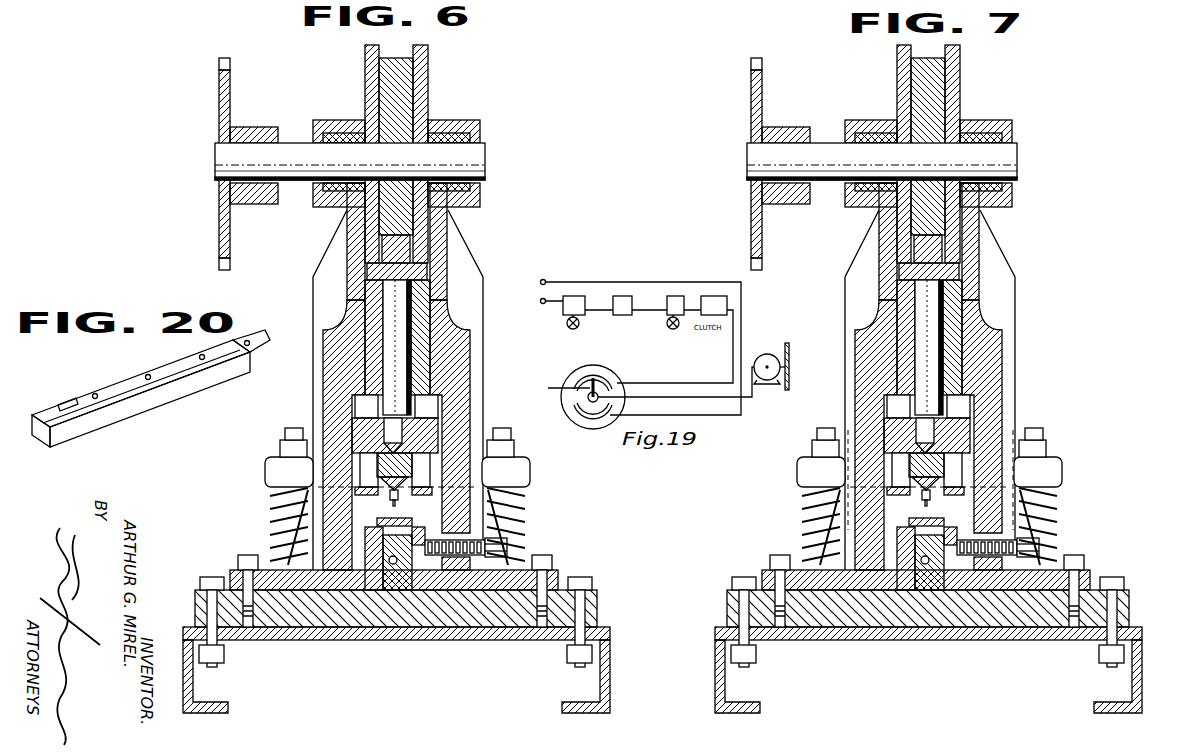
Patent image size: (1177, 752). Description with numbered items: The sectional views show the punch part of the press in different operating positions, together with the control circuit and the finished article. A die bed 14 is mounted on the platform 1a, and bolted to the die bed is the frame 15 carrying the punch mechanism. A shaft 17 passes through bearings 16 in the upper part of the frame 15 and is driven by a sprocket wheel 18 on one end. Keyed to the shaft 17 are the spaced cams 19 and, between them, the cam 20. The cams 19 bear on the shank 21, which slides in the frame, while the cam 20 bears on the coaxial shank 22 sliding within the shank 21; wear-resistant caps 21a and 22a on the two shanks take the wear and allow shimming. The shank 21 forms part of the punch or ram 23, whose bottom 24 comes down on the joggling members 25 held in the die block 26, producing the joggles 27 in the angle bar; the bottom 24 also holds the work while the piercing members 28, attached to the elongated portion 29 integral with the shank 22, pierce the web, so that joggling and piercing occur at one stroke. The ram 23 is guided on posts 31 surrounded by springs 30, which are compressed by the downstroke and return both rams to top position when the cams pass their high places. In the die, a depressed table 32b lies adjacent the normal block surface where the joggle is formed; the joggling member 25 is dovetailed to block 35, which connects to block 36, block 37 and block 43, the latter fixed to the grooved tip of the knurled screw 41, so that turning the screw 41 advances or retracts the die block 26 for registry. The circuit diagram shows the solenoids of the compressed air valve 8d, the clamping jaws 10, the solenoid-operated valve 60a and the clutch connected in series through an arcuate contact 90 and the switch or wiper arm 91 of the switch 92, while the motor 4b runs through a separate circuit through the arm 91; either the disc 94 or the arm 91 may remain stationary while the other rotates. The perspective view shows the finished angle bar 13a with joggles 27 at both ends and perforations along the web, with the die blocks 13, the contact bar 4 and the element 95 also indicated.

In FIG. 6, the platform 1a is at (357, 640).
In FIG. 7, the platform 1a is at (928, 670).
In FIG. 19, the contact bar 4 is at (789, 360).
In FIG. 19, the motor 4b is at (768, 354).
In FIG. 19, the compressed air valve 8d is at (564, 317).
In FIG. 19, the clamping jaws 10 is at (634, 322).
In FIG. 6, the block 13 is at (372, 532).
In FIG. 7, the block 13 is at (906, 558).
In FIG. 20, the bar 13a is at (150, 393).
In FIG. 6, the die bed 14 is at (197, 598).
In FIG. 7, the die bed 14 is at (906, 622).
In FIG. 6, the frame 15 is at (480, 353).
In FIG. 7, the frame 15 is at (959, 386).
In FIG. 6, the bearings 16 is at (318, 124).
In FIG. 7, the bearings 16 is at (928, 153).
In FIG. 6, the shaft 17 is at (485, 158).
In FIG. 7, the shaft 17 is at (900, 161).
In FIG. 6, the sprocket wheel 18 is at (232, 103).
In FIG. 7, the sprocket wheel 18 is at (780, 164).
In FIG. 6, the cams 19 is at (368, 60).
In FIG. 7, the cams 19 is at (928, 154).
In FIG. 6, the cam 20 is at (383, 98).
In FIG. 7, the cam 20 is at (953, 146).
In FIG. 6, the shank 21 is at (423, 302).
In FIG. 7, the shank 21 is at (973, 314).
In FIG. 6, the cap 21a is at (427, 267).
In FIG. 7, the cap 21a is at (877, 282).
In FIG. 6, the shank 22 is at (400, 333).
In FIG. 7, the shank 22 is at (981, 336).
In FIG. 6, the cap 22a is at (400, 240).
In FIG. 7, the cap 22a is at (982, 237).
In FIG. 6, the punch or ram 23 is at (268, 473).
In FIG. 7, the punch or ram 23 is at (923, 483).
In FIG. 6, the bottom of the ram 24 is at (428, 517).
In FIG. 7, the bottom of the ram 24 is at (919, 515).
In FIG. 6, the joggling members 25 is at (385, 515).
In FIG. 7, the joggling members 25 is at (847, 486).
In FIG. 6, the die block 26 is at (356, 553).
In FIG. 7, the die block 26 is at (833, 554).
In FIG. 20, the joggles 27 is at (70, 402).
In FIG. 6, the piercing members 28 is at (410, 480).
In FIG. 7, the piercing members 28 is at (998, 479).
In FIG. 6, the elongated portion 29 is at (357, 433).
In FIG. 7, the elongated portion 29 is at (888, 427).
In FIG. 6, the springs 30 is at (272, 535).
In FIG. 7, the springs 30 is at (921, 526).
In FIG. 6, the posts 31 is at (282, 437).
In FIG. 7, the posts 31 is at (910, 438).
In FIG. 6, the depressed table 32b is at (430, 533).
In FIG. 7, the depressed table 32b is at (950, 536).
In FIG. 6, the block 35 is at (388, 560).
In FIG. 7, the block 35 is at (903, 563).
In FIG. 6, the block 36 is at (327, 567).
In FIG. 7, the block 36 is at (790, 590).
In FIG. 6, the block 37 is at (553, 560).
In FIG. 7, the block 37 is at (1007, 612).
In FIG. 6, the screw 41 is at (505, 548).
In FIG. 7, the screw 41 is at (1041, 552).
In FIG. 6, the block 43 is at (512, 540).
In FIG. 7, the block 43 is at (1053, 544).
In FIG. 19, the solenoid-operated valve 60a is at (669, 318).
In FIG. 19, the arcuate contact 90 is at (594, 377).
In FIG. 19, the switch or wiper arm 91 is at (560, 390).
In FIG. 19, the switch 92 is at (617, 372).
In FIG. 19, the disc 94 is at (575, 378).
In FIG. 19, the slot 95 is at (580, 418).